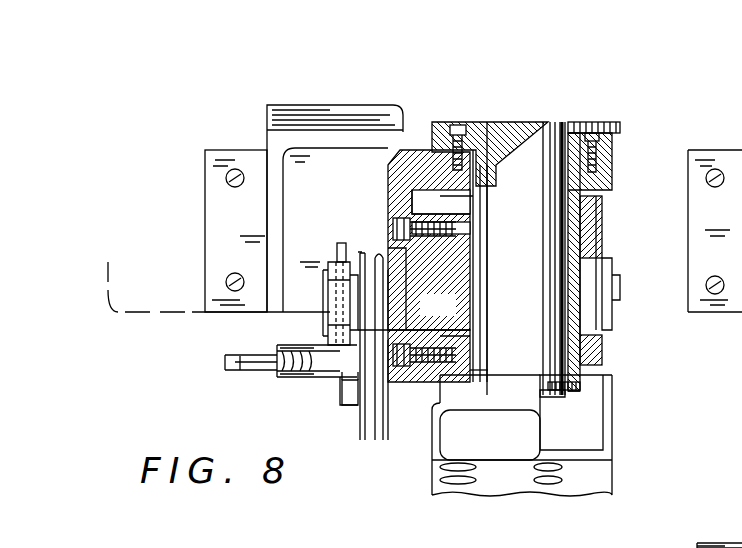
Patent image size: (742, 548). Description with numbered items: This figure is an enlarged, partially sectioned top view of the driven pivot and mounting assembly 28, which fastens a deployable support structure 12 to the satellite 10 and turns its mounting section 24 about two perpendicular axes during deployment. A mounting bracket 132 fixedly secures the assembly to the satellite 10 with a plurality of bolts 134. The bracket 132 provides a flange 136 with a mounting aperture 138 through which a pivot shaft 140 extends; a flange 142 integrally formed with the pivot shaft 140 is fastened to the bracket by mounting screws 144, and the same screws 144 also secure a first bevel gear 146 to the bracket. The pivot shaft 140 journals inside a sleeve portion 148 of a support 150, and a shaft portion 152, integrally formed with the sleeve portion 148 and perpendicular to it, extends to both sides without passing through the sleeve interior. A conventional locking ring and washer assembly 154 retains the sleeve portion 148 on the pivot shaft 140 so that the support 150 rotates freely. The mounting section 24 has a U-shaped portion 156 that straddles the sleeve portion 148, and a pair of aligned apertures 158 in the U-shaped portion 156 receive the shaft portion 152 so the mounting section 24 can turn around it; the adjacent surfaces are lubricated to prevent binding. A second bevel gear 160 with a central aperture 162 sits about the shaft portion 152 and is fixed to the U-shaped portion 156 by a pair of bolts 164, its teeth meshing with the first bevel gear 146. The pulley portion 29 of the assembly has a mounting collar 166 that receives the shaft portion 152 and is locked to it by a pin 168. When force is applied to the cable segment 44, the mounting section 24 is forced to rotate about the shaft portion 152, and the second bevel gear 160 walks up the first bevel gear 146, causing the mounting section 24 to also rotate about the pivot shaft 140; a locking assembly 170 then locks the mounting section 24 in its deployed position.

The satellite 10 is at (98, 266).
The deployable support structure 12 is at (604, 478).
The mounting section 24 is at (478, 488).
The driven pivot and mounting assembly 28 is at (568, 118).
The pulley portion 29 is at (357, 414).
The cable segment 44 is at (375, 430).
The mounting bracket 132 is at (257, 150).
The bolts 134 is at (205, 268).
The flange 136 is at (405, 130).
The mounting aperture 138 is at (583, 128).
The pivot shaft 140 is at (518, 258).
The flange 142 is at (494, 133).
The mounting screws 144 is at (463, 125).
The first bevel gear 146 is at (488, 190).
The sleeve portion 148 is at (479, 372).
The support 150 is at (547, 118).
The shaft portion 152 is at (574, 292).
The locking ring and washer assembly 154 is at (555, 398).
The U-shaped portion 156 is at (466, 216).
The aligned apertures 158 is at (460, 258).
The second bevel gear 160 is at (392, 168).
The central aperture 162 is at (403, 240).
The bolts 164 is at (393, 222).
The mounting collar 166 is at (333, 262).
The pin 168 is at (341, 245).
The locking assembly 170 is at (264, 384).